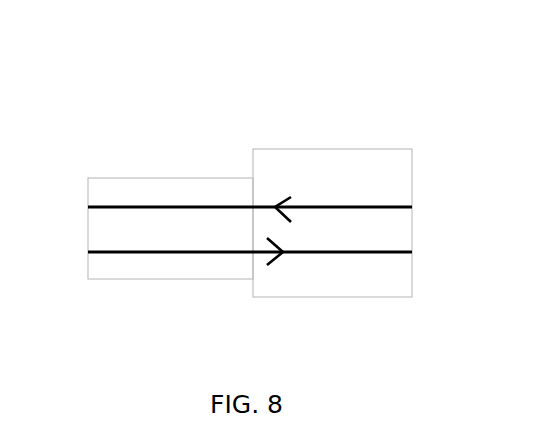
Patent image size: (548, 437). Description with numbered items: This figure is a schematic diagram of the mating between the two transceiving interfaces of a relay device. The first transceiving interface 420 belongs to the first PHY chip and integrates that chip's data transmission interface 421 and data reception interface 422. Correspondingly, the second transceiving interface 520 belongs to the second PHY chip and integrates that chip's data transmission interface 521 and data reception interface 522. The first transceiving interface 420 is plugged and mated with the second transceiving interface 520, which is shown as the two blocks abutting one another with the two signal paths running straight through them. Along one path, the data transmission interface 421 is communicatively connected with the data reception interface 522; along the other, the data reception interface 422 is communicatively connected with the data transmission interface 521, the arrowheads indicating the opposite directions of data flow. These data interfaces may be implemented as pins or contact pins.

The first transceiving interface 420 is at (125, 190).
The data transmission interface 421 is at (187, 254).
The data reception interface 422 is at (198, 206).
The second transceiving interface 520 is at (334, 160).
The data transmission interface 521 is at (303, 206).
The data reception interface 522 is at (301, 255).